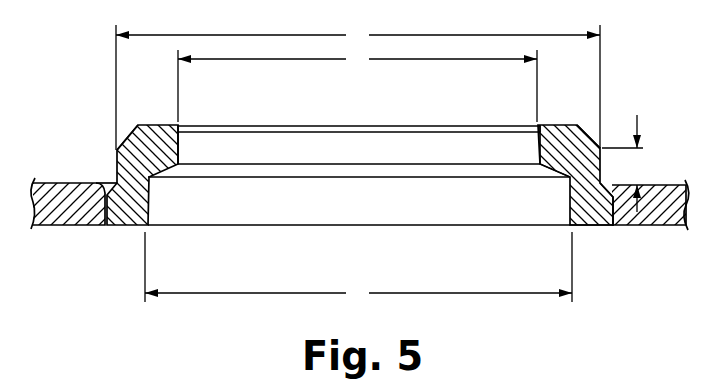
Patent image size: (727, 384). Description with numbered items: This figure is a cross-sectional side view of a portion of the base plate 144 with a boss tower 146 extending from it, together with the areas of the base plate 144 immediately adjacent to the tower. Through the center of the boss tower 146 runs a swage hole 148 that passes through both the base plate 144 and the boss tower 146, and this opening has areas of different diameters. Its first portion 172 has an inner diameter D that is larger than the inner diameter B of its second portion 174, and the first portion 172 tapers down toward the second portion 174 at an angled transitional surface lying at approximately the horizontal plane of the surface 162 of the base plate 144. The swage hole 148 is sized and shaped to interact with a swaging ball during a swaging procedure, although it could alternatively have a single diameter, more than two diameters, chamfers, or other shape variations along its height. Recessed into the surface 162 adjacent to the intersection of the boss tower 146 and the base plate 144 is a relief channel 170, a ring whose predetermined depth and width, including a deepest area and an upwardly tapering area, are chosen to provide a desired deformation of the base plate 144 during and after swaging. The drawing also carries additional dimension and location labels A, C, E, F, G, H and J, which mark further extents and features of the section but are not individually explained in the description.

The base plate 144 is at (58, 183).
The surface of the base plate 162 is at (679, 185).
The boss tower 146 is at (601, 170).
The swage hole 148 is at (437, 126).
The relief channel 170 is at (613, 226).
The first portion 172 is at (352, 212).
The second portion 174 is at (351, 143).
The overall width dimension A is at (358, 87).
The inner diameter of second portion B is at (357, 85).
The height dimension C is at (630, 163).
The inner diameter of first portion D is at (358, 267).
The step location E is at (112, 188).
The inclined surface F is at (569, 168).
The left clamp corner G is at (127, 132).
The plate end H is at (557, 150).
The right clamp corner J is at (581, 127).